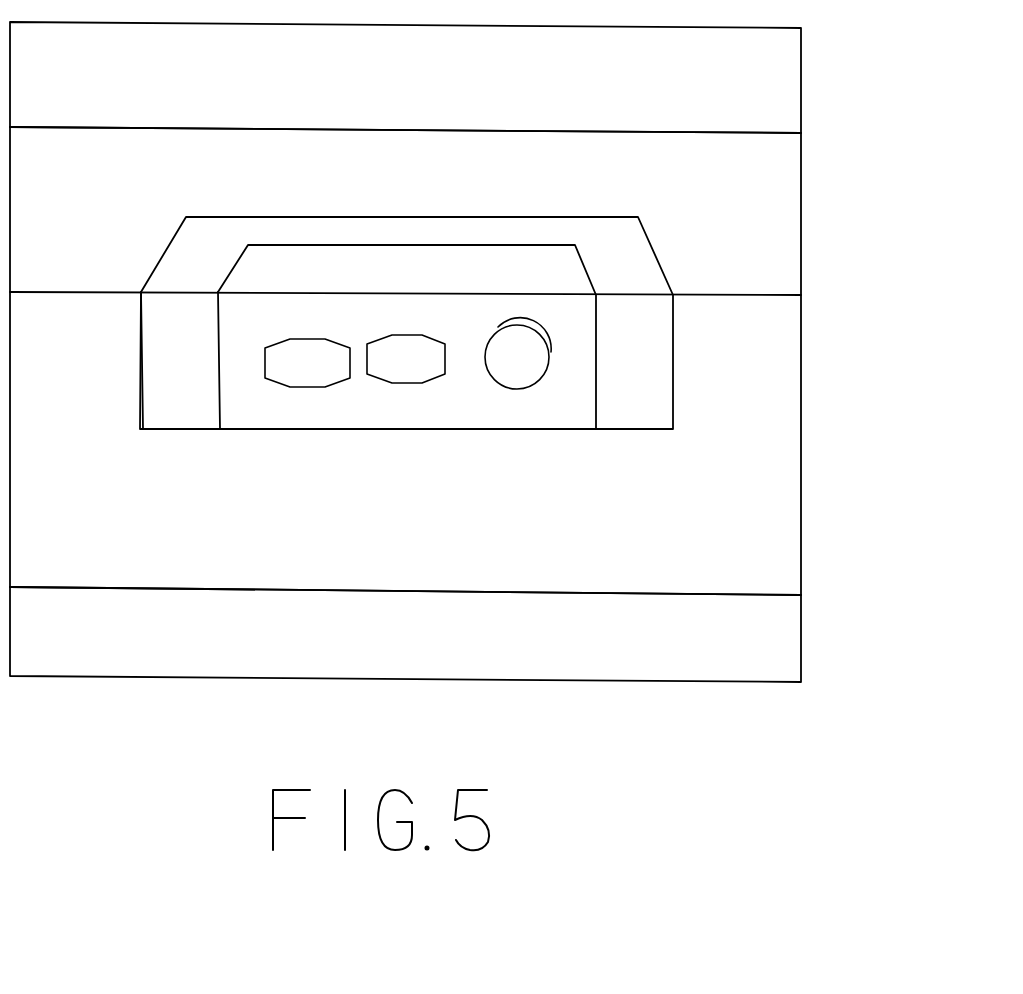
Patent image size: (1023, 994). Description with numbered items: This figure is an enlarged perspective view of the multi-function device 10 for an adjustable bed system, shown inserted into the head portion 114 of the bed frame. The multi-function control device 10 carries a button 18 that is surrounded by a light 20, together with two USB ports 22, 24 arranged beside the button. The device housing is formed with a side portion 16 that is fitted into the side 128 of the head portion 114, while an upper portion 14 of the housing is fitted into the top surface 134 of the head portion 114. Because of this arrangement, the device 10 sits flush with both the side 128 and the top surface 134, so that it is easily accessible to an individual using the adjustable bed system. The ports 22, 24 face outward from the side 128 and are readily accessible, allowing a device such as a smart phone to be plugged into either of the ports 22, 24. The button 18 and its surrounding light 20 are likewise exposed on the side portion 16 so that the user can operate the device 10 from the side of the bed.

The multi-function device 10 is at (410, 199).
The upper portion 14 is at (614, 252).
The side portion 16 is at (182, 370).
The button 18 is at (515, 370).
The light 20 is at (540, 331).
The USB port 22 is at (300, 372).
The USB port 24 is at (410, 368).
The head portion 114 is at (853, 148).
The side 128 is at (772, 407).
The top surface 134 is at (780, 237).